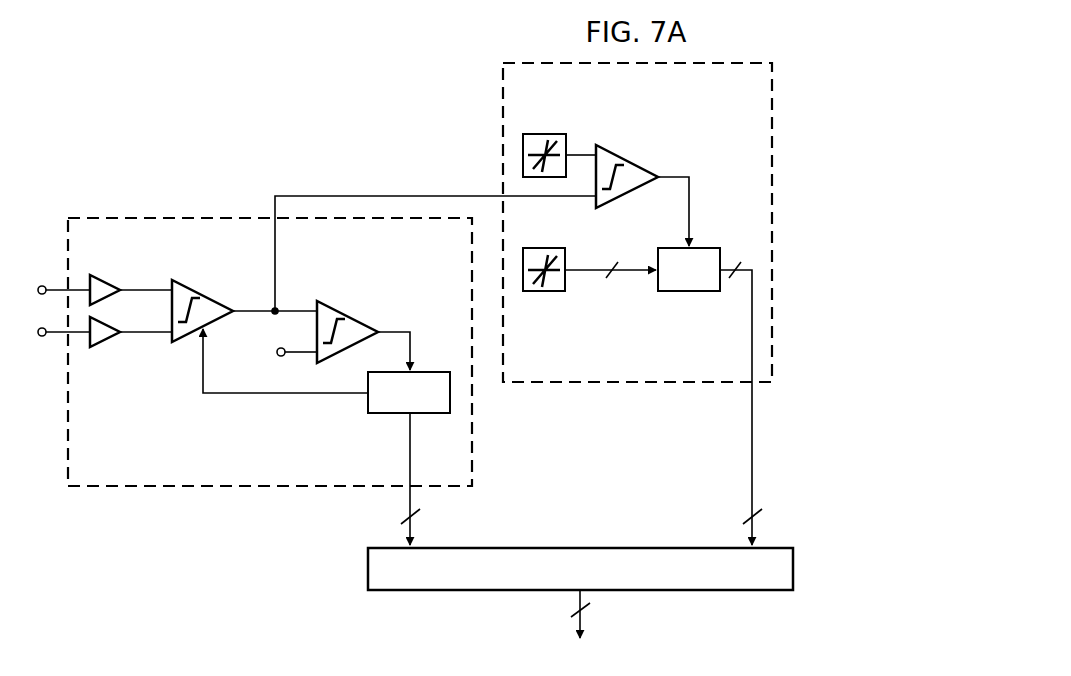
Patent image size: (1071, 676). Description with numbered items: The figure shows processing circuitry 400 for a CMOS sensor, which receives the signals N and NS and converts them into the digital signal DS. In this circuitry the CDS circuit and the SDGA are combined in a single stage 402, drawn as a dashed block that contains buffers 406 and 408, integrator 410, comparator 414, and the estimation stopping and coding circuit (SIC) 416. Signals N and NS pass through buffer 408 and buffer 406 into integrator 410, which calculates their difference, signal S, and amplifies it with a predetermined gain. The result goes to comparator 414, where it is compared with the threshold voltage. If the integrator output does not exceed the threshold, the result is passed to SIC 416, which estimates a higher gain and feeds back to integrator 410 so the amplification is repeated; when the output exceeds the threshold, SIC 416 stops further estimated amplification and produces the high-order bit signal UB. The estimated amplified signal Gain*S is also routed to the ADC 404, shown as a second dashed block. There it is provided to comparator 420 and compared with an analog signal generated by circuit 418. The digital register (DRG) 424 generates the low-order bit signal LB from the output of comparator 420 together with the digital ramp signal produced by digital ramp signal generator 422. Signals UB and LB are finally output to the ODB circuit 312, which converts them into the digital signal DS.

The processing circuitry 400 is at (284, 134).
The stage 402 is at (225, 492).
The ADC 404 is at (776, 161).
The buffer 406 is at (106, 341).
The buffer 408 is at (108, 279).
The integrator 410 is at (215, 296).
The comparator 414 is at (351, 313).
The estimation stopping and coding circuit (SIC) 416 is at (430, 414).
The circuit 418 is at (555, 133).
The comparator 420 is at (630, 161).
The digital ramp signal generator 422 is at (555, 292).
The digital register (DRG) 424 is at (700, 292).
The ODB circuit 312 is at (700, 591).